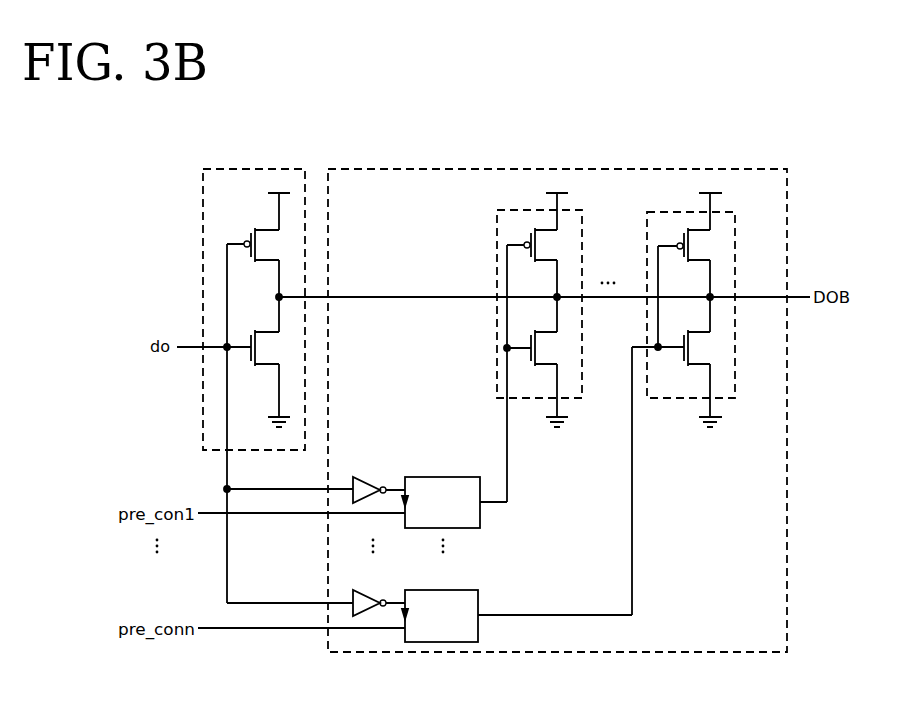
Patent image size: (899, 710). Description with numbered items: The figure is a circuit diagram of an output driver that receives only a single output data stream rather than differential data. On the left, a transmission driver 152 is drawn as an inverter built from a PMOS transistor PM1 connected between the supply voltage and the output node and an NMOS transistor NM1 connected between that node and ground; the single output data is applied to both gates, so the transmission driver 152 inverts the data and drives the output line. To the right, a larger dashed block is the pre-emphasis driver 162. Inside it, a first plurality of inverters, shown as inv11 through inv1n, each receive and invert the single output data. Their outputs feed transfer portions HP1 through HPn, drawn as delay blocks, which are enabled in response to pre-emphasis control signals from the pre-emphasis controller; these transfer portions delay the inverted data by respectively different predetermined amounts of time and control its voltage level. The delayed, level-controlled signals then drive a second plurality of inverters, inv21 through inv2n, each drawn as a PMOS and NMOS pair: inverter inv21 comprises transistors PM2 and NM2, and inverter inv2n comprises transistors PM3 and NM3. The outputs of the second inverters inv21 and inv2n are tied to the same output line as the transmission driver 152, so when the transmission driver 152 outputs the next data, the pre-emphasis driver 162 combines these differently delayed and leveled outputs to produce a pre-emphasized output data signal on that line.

The transmission driver 152 is at (259, 171).
The pre-emphasis driver 162 is at (687, 171).
The PMOS transistor PM1 is at (263, 245).
The NMOS transistor NM1 is at (238, 348).
The second inverter inv21 is at (562, 310).
The PMOS transistor PM2 is at (542, 245).
The NMOS transistor NM2 is at (542, 348).
The second inverter inv2n is at (708, 310).
The PMOS transistor PM3 is at (694, 245).
The NMOS transistor NM3 is at (681, 348).
The first inverter inv11 is at (379, 479).
The transfer portion HP1 is at (444, 492).
The first inverter inv1n is at (379, 592).
The transfer portion HPn is at (445, 605).